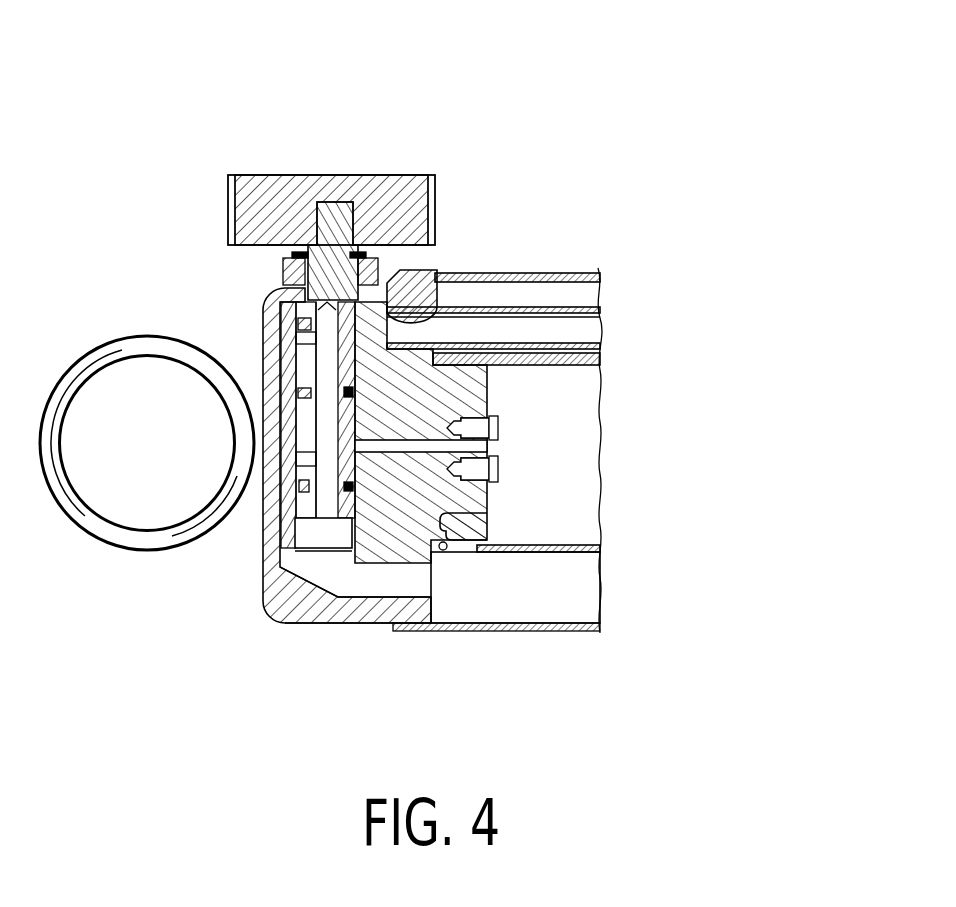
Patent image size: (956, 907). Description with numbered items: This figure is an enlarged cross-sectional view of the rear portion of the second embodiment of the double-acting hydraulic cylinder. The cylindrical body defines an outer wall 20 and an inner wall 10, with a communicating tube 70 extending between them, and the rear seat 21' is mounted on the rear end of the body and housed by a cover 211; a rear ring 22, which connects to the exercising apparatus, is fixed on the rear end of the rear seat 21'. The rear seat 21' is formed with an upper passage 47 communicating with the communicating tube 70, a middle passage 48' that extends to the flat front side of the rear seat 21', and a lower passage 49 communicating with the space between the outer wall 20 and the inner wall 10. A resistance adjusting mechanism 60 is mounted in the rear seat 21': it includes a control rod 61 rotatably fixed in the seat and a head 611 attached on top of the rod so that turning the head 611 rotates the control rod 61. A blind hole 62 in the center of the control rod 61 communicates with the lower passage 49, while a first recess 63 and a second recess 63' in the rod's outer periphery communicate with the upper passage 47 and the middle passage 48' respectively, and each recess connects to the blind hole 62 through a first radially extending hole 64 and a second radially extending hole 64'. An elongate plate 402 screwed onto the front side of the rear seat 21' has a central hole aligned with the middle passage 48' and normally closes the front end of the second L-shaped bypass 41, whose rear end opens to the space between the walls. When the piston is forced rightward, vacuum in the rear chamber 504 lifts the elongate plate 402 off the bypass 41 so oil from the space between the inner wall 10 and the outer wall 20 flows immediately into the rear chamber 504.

The resistance adjusting mechanism 60 is at (341, 93).
The head 611 is at (262, 176).
The control rod 61 is at (360, 213).
The upper passage 47 is at (418, 295).
The communicating tube 70 is at (527, 306).
The outer wall 20 is at (599, 276).
The inner wall 10 is at (599, 366).
The elongate plate 402 is at (500, 383).
The first recess 63 is at (256, 314).
The first radially extending hole 64 is at (236, 371).
The second recess 63' is at (248, 419).
The second radially extending hole 64' is at (237, 473).
The rear ring 22 is at (81, 533).
The blind hole 62 is at (318, 492).
The middle passage 48' is at (507, 445).
The second L-shaped bypass 41 is at (447, 528).
The rear chamber 504 is at (599, 530).
The rear seat 21' is at (329, 486).
The cover 211 is at (316, 622).
The lower passage 49 is at (370, 577).